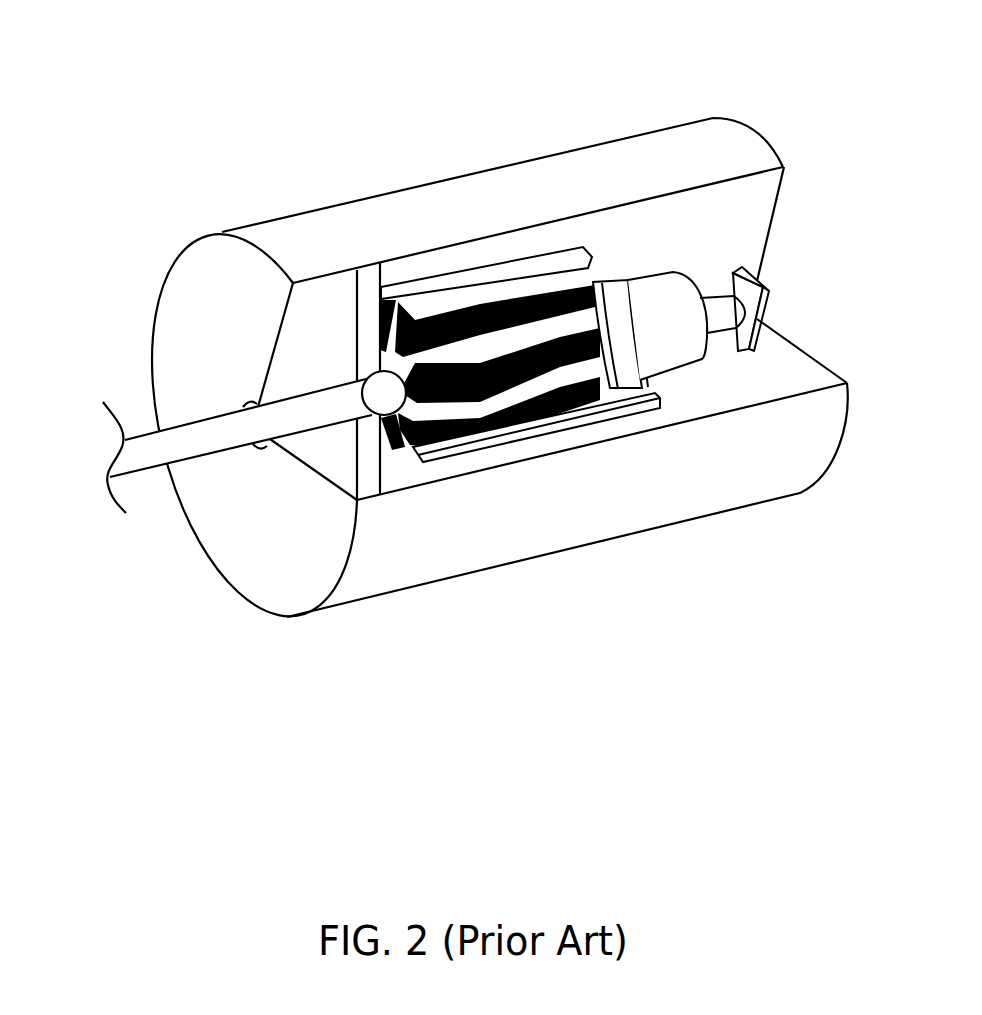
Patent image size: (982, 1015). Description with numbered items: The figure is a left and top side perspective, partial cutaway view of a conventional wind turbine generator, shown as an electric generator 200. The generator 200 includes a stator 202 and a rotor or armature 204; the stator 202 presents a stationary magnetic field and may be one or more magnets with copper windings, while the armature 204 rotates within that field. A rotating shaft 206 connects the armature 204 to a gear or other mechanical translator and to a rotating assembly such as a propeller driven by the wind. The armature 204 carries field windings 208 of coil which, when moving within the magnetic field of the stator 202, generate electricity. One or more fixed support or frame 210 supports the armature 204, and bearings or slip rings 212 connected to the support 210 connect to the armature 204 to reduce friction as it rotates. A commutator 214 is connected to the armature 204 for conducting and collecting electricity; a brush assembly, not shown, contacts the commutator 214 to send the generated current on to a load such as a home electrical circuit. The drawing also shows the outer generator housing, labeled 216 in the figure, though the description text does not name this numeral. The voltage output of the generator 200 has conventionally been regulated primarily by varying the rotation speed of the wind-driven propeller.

The electric generator 200 is at (234, 98).
The stator 202 is at (354, 283).
The rotor or armature 204 is at (555, 327).
The rotating shaft 206 is at (205, 452).
The field windings 208 is at (446, 318).
The fixed support or frame 210 is at (353, 463).
The bearings or slip rings 212 is at (355, 385).
The commutator 214 is at (673, 367).
The motor housing 216 is at (667, 127).